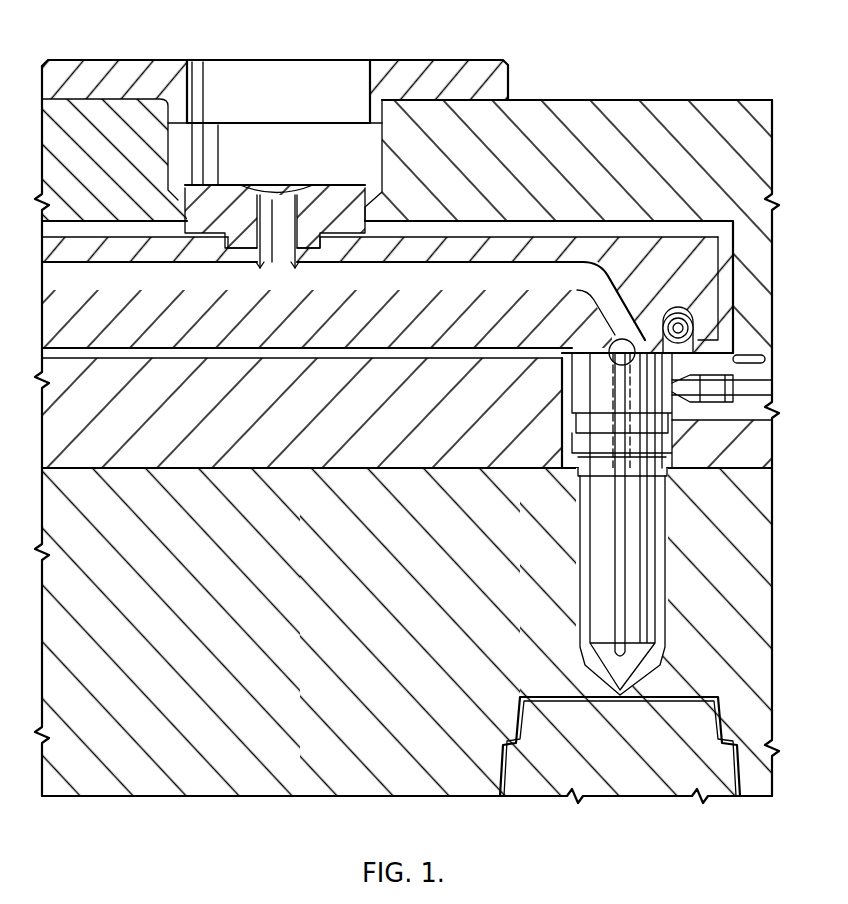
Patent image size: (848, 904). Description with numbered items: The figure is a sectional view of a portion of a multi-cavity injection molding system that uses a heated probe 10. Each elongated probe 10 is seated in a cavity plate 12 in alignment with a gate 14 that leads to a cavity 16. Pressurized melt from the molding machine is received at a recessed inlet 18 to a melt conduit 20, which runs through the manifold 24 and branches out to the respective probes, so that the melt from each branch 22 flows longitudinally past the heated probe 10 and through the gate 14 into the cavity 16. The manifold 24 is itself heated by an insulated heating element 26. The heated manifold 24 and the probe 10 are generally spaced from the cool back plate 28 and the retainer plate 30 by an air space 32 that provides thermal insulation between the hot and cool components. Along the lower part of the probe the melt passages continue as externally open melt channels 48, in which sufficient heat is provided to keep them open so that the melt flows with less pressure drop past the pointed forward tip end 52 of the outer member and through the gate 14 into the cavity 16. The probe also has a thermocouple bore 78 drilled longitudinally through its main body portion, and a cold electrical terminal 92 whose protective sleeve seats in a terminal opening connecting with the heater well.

The heated probe 10 is at (660, 497).
The cavity plate 12 is at (102, 772).
The gate 14 is at (620, 697).
The cavity 16 is at (670, 701).
The recessed inlet 18 is at (265, 188).
The melt conduit 20 is at (283, 217).
The branch 22 is at (503, 280).
The manifold 24 is at (60, 310).
The insulated heating element 26 is at (665, 312).
The back plate 28 is at (90, 108).
The retainer plate 30 is at (75, 453).
The air space 32 is at (82, 224).
The externally open melt channels 48 is at (617, 628).
The pointed forward tip end 52 is at (617, 700).
The thermocouple bore 78 is at (640, 617).
The cold electrical terminal 92 is at (722, 400).